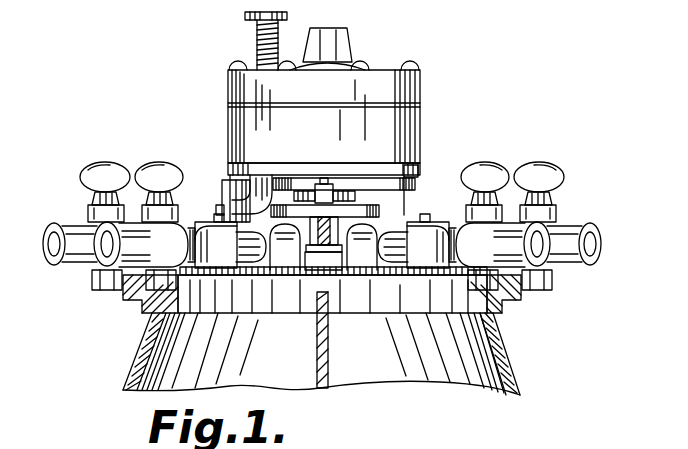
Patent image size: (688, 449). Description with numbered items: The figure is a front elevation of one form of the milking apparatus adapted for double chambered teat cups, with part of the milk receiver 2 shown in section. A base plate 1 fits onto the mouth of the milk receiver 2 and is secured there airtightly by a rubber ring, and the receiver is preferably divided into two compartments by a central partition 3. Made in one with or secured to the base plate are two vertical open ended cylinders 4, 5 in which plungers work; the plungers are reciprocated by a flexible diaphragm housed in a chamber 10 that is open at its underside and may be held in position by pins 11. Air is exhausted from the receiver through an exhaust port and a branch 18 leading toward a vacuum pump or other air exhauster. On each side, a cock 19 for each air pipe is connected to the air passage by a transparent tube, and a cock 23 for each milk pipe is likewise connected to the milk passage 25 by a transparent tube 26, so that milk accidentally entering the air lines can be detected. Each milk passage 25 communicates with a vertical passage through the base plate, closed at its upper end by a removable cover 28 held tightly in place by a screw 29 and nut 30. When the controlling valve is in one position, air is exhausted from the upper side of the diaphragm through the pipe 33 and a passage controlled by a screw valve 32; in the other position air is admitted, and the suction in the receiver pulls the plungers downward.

The base plate 1 is at (262, 274).
The milk receiver 2 is at (142, 336).
The central partition 3 is at (318, 360).
The vertical open ended cylinder 4 is at (412, 196).
The vertical open ended cylinder 5 is at (256, 195).
The chamber 10 is at (245, 83).
The pin 11 is at (230, 170).
The branch 18 is at (340, 35).
The cock 19 is at (73, 235).
The cock 23 is at (152, 180).
The milk passage 25 is at (290, 250).
The transparent tube 26 is at (398, 258).
The removable cover 28 is at (379, 212).
The screw 29 is at (333, 188).
The nut 30 is at (322, 182).
The screw valve 32 is at (257, 30).
The pipe 33 is at (243, 186).